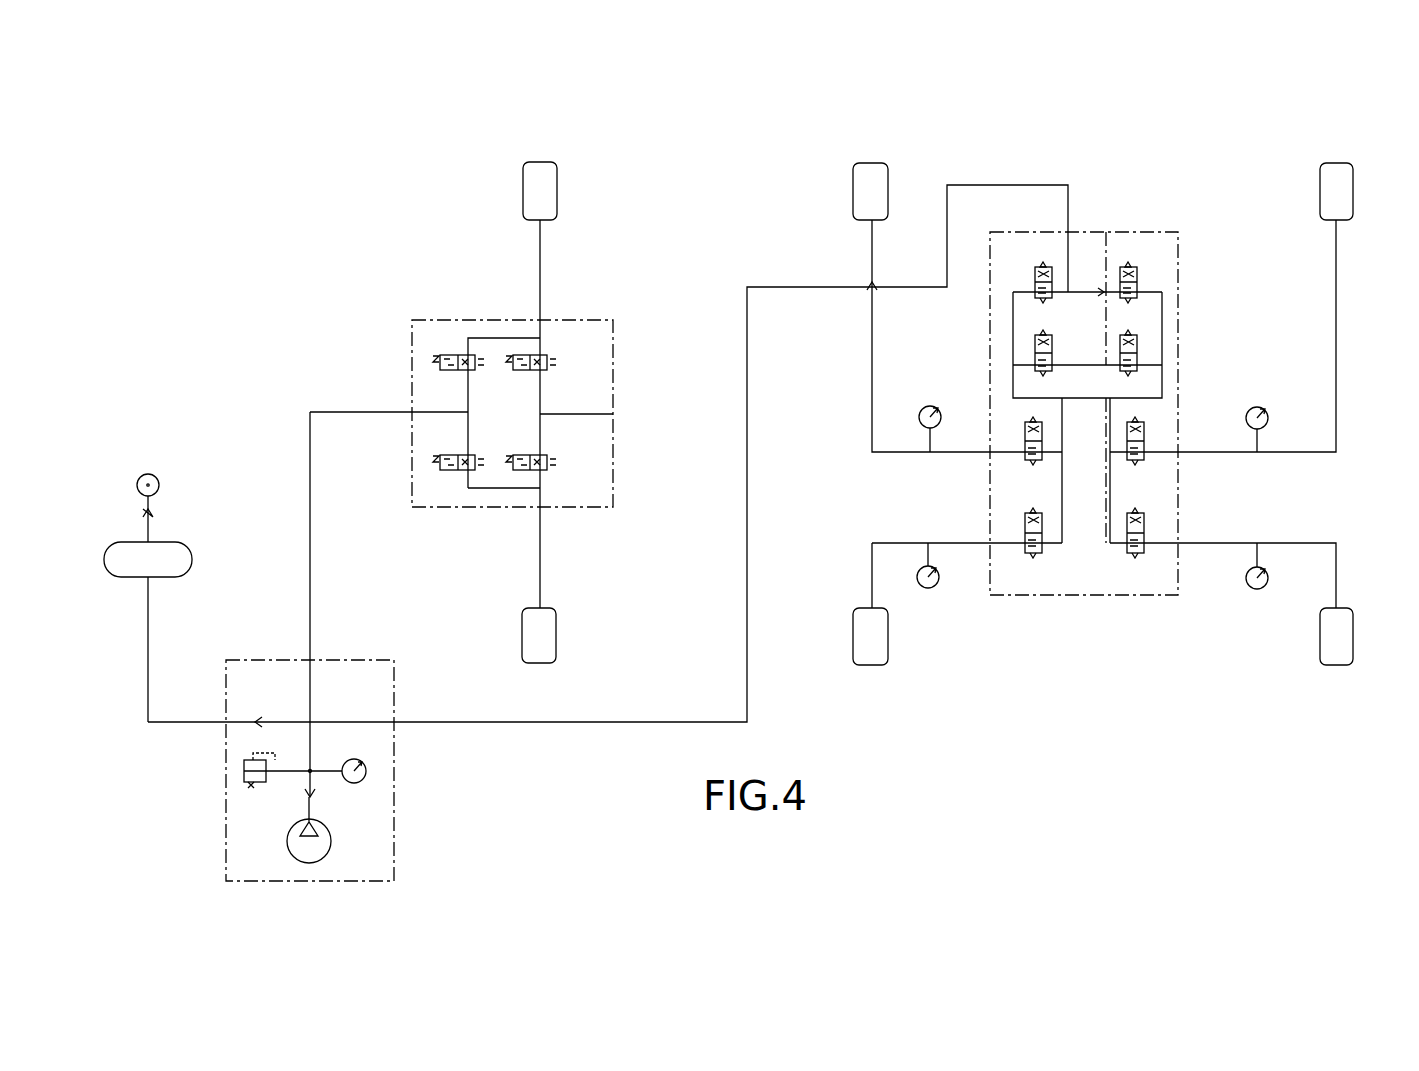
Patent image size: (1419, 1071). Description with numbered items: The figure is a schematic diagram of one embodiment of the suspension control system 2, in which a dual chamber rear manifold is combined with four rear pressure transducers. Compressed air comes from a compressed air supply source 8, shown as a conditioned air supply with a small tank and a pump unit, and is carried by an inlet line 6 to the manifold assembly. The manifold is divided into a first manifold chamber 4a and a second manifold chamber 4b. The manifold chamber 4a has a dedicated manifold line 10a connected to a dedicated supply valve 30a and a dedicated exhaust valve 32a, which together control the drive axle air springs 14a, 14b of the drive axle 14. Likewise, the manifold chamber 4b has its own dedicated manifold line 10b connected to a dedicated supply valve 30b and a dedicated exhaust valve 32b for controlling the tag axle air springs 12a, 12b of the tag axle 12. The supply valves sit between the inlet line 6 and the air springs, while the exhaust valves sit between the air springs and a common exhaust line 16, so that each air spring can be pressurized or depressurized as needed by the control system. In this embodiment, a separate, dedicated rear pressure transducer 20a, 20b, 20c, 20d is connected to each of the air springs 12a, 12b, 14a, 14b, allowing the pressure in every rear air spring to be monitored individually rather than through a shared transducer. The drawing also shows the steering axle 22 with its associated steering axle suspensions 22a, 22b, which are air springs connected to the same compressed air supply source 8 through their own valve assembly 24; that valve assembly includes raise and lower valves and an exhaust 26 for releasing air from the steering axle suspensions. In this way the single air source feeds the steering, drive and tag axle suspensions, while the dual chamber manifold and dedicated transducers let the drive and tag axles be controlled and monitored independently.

The suspension control system 2 is at (764, 195).
The manifold chamber 4a is at (979, 329).
The manifold chamber 4b is at (1200, 313).
The inlet line 6 is at (745, 527).
The compressed air supply source 8 is at (231, 660).
The manifold line 10a is at (1063, 481).
The manifold line 10b is at (1110, 496).
The tag axle 12 is at (1342, 105).
The tag axle air spring 12a is at (1355, 628).
The tag axle air spring 12b is at (1354, 181).
The drive axle 14 is at (848, 112).
The drive axle air spring 14a is at (889, 646).
The drive axle air spring 14b is at (889, 186).
The exhaust line 16 is at (1105, 240).
The rear pressure transducer 20a is at (920, 425).
The rear pressure transducer 20b is at (1268, 416).
The rear pressure transducer 20c is at (1247, 587).
The rear pressure transducer 20d is at (940, 582).
The steering axle 22 is at (540, 112).
The steering axle suspension 22a is at (557, 636).
The steering axle suspension 22b is at (558, 186).
The valve assembly 24 is at (474, 310).
The exhaust 26 is at (594, 410).
The supply valve 30a is at (1036, 268).
The supply valve 30b is at (1138, 270).
The exhaust valve 32a is at (1035, 351).
The exhaust valve 32b is at (1138, 355).